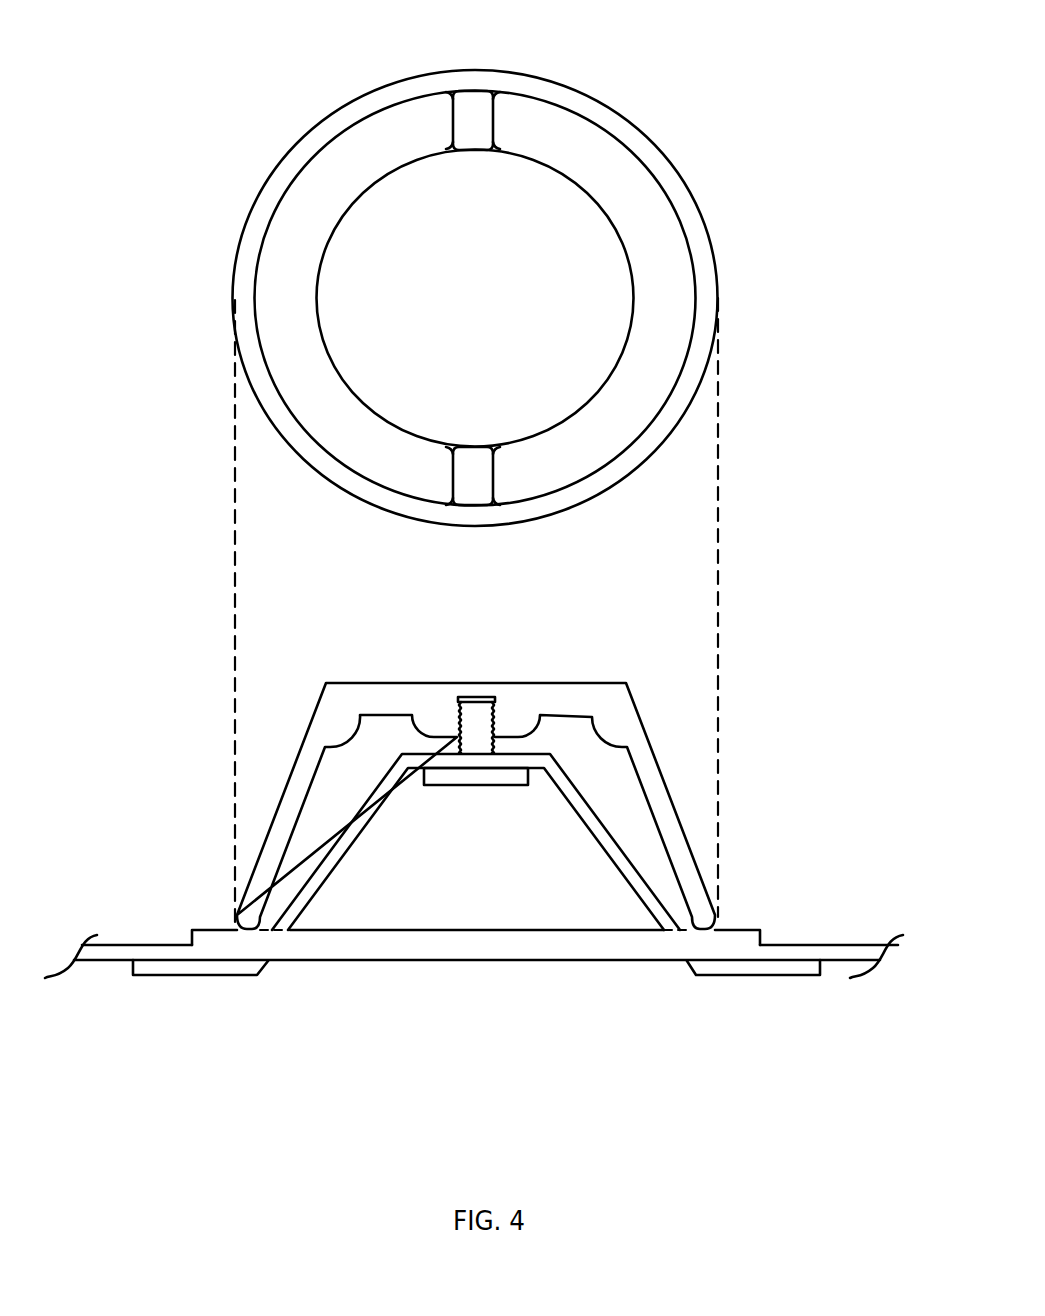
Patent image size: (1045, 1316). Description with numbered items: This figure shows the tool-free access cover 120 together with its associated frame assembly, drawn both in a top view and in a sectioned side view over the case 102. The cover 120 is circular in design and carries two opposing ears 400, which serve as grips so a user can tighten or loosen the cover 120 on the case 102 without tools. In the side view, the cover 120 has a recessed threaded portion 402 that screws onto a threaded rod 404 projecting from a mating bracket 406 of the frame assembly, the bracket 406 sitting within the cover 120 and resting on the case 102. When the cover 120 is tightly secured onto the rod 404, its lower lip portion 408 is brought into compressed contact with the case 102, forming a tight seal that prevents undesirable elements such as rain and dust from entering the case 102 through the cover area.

The case 102 is at (192, 944).
The tool-free access cover 120 is at (314, 129).
The ears 400 is at (472, 90).
The recessed threaded portion 402 is at (466, 696).
The threaded rod 404 is at (497, 720).
The mating bracket 406 is at (592, 833).
The lower lip portion 408 is at (238, 922).